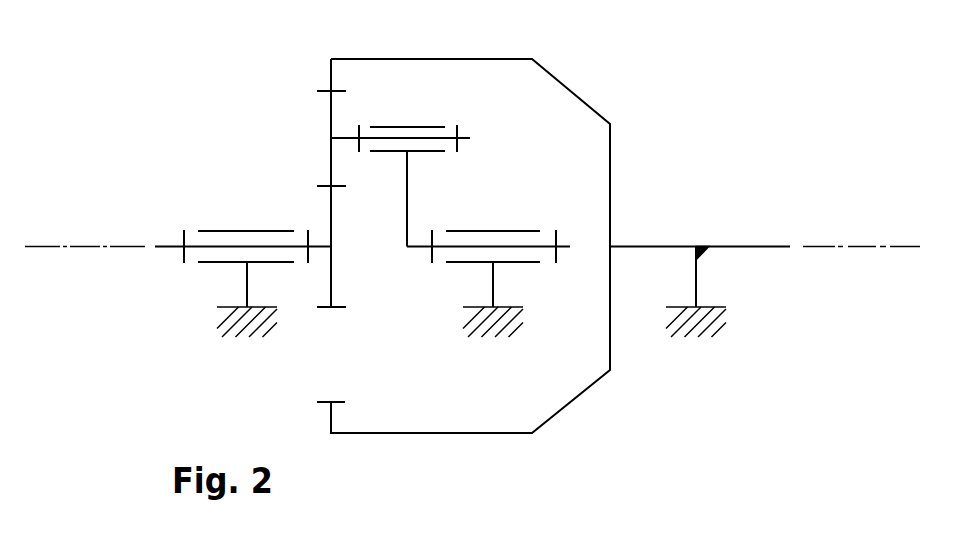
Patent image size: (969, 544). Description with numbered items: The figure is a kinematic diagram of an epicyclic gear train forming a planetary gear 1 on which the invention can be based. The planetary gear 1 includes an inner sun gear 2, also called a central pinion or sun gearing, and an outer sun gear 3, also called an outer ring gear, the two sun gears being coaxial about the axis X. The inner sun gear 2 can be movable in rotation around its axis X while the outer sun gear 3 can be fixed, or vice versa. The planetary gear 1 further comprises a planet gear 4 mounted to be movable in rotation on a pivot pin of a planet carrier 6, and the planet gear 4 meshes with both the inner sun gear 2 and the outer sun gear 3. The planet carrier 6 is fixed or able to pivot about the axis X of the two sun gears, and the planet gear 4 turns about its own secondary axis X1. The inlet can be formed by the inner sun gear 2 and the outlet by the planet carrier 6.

The planetary gear 1 is at (693, 128).
The inner sun gear 2 is at (331, 277).
The outer sun gear 3 is at (462, 59).
The planet gear 4 is at (331, 112).
The planet carrier 6 is at (407, 177).
The axis X is at (897, 247).
The secondary axis X1 is at (464, 136).